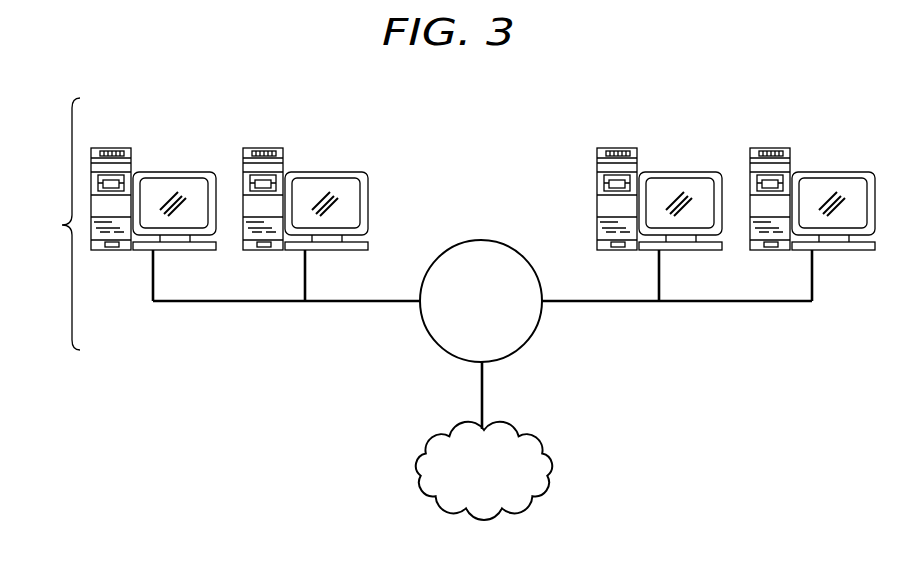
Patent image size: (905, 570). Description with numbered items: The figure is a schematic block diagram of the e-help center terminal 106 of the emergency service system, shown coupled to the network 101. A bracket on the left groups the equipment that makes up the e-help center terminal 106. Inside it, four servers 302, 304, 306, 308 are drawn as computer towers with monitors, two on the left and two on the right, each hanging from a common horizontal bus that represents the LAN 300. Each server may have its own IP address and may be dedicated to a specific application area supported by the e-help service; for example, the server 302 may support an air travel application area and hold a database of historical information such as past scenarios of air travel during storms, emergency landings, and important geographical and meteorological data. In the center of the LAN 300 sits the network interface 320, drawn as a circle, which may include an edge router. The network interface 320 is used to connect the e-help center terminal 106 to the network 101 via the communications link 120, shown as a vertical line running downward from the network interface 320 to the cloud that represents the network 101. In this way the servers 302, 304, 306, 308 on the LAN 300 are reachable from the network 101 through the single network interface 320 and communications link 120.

The e-help center terminal 106 is at (65, 225).
The server 302 is at (113, 148).
The server 304 is at (265, 148).
The server 306 is at (619, 148).
The server 308 is at (772, 148).
The LAN 300 is at (237, 303).
The network interface 320 is at (483, 240).
The communications link 120 is at (484, 396).
The network 101 is at (418, 470).